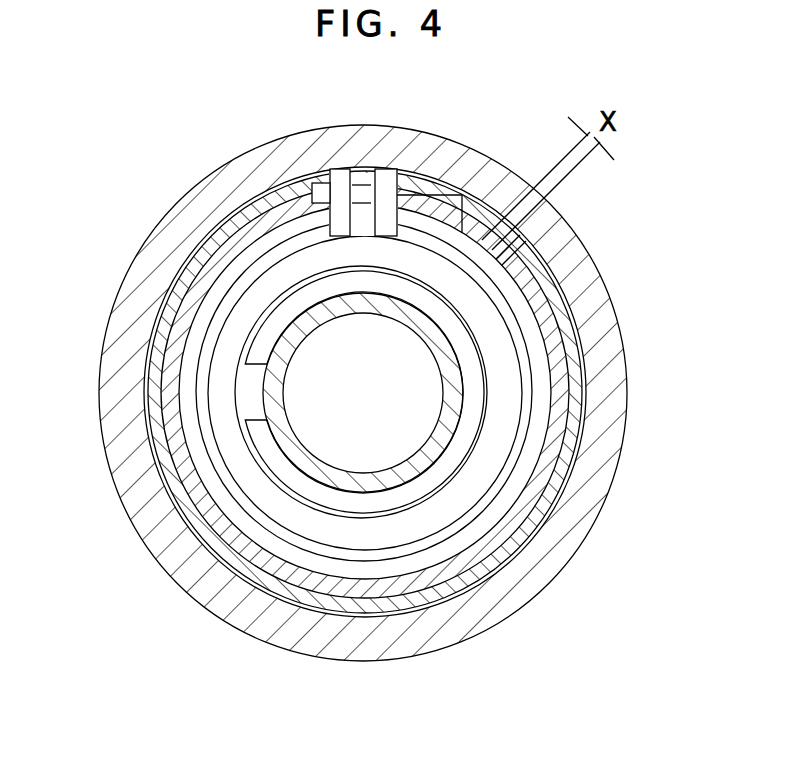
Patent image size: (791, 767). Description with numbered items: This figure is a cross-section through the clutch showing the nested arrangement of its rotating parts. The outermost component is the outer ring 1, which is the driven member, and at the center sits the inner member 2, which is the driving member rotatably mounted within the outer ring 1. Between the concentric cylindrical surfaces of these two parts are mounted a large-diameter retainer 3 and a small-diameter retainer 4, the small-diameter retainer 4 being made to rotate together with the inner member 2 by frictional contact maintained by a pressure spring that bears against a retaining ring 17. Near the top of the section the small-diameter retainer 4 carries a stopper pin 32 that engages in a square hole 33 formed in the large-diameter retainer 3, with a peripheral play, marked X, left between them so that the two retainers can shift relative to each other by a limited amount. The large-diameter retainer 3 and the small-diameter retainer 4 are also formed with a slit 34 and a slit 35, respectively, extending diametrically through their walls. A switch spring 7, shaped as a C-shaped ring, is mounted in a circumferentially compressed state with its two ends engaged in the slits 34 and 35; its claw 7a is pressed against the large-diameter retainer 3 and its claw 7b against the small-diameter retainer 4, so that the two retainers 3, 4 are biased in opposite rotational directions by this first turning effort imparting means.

The outer ring 1 is at (603, 331).
The inner member 2 is at (321, 471).
The large-diameter retainer 3 is at (579, 404).
The small-diameter retainer 4 is at (536, 488).
The switch spring 7 is at (256, 264).
The claw 7a is at (339, 187).
The claw 7b is at (383, 187).
The retaining ring 17 is at (261, 338).
The stopper pin 32 is at (520, 232).
The square hole 33 is at (518, 243).
The slit 34 is at (403, 182).
The slit 35 is at (326, 178).